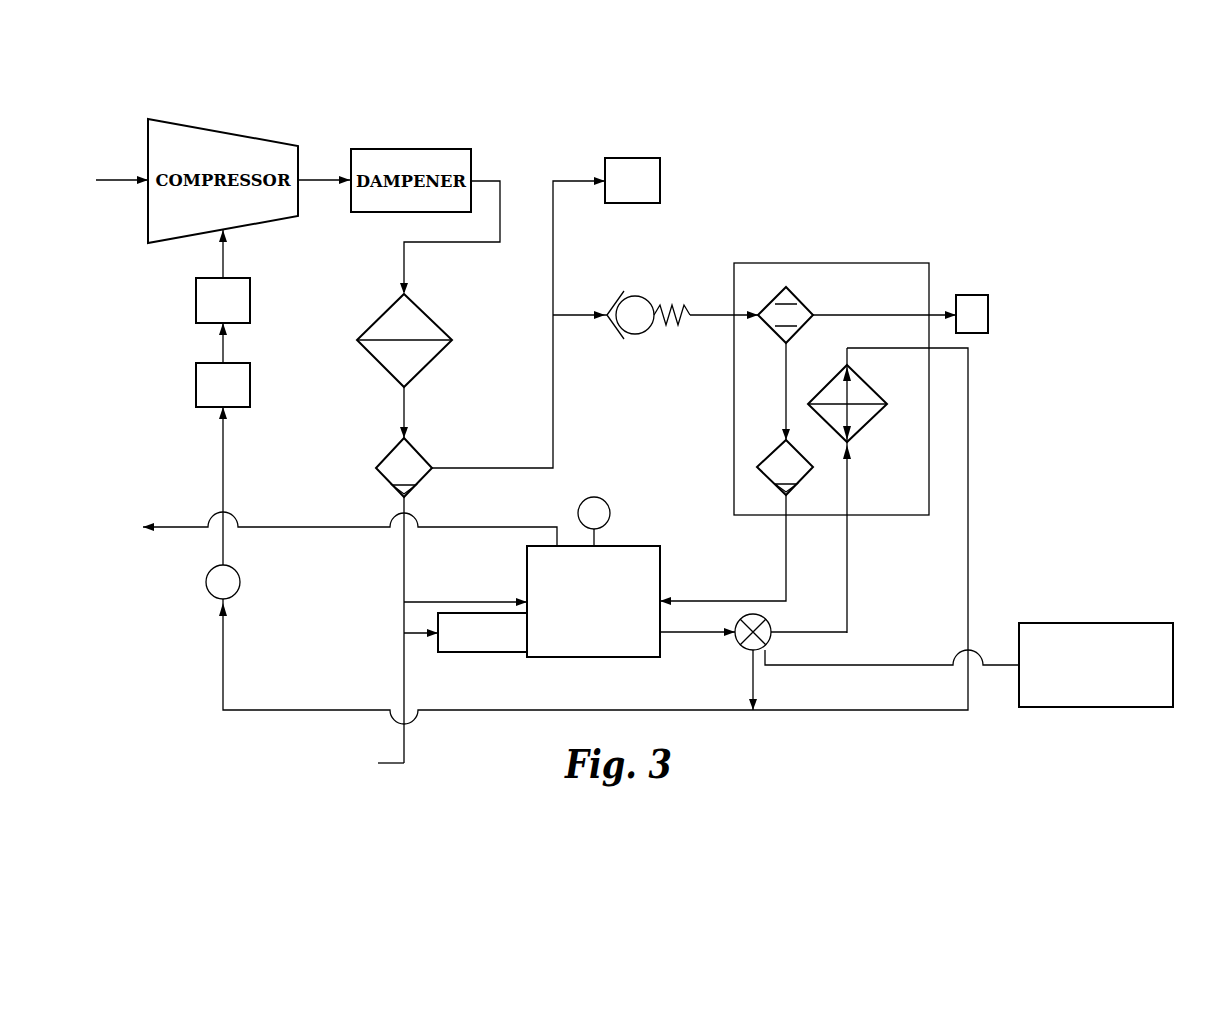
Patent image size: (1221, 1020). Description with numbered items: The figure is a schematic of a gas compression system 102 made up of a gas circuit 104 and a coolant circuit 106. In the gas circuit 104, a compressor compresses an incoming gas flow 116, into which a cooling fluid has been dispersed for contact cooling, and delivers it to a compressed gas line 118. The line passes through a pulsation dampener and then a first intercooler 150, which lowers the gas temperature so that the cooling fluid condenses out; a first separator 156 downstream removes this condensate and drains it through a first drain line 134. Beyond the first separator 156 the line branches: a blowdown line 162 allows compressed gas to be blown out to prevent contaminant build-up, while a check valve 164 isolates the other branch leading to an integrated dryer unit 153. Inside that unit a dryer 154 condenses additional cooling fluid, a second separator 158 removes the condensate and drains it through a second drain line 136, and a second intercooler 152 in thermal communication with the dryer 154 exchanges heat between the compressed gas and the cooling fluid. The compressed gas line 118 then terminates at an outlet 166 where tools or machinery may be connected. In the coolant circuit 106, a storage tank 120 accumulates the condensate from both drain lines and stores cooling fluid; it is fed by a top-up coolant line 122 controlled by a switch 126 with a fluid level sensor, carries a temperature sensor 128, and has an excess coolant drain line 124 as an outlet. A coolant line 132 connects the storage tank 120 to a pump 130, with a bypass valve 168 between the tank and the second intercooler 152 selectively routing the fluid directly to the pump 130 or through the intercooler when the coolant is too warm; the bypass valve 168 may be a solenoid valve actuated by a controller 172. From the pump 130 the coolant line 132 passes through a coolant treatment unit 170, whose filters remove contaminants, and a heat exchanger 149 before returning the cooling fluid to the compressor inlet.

The gas compression system 102 is at (108, 108).
The gas circuit 104 is at (540, 163).
The coolant circuit 106 is at (192, 442).
The incoming gas flow 116 is at (118, 184).
The compressed gas line 118 is at (318, 178).
The storage tank 120 is at (642, 545).
The top-up coolant line 122 is at (408, 730).
The excess coolant drain line 124 is at (183, 530).
The switch 126 is at (485, 652).
The temperature sensor 128 is at (604, 497).
The pump 130 is at (240, 596).
The coolant line 132 is at (226, 541).
The first drain line 134 is at (403, 565).
The second drain line 136 is at (723, 600).
The heat exchanger 149 is at (250, 300).
The first intercooler 150 is at (438, 322).
The second intercooler 152 is at (874, 420).
The integrated dryer unit 153 is at (789, 263).
The dryer 154 is at (767, 325).
The first separator 156 is at (420, 452).
The second separator 158 is at (760, 463).
The blowdown line 162 is at (660, 180).
The check valve 164 is at (652, 297).
The outlet 166 is at (948, 303).
The bypass valve 168 is at (771, 620).
The coolant treatment unit 170 is at (196, 381).
The controller 172 is at (1102, 622).